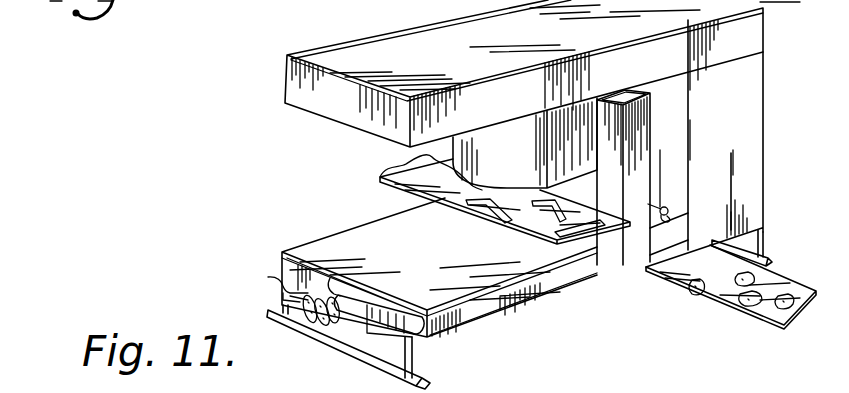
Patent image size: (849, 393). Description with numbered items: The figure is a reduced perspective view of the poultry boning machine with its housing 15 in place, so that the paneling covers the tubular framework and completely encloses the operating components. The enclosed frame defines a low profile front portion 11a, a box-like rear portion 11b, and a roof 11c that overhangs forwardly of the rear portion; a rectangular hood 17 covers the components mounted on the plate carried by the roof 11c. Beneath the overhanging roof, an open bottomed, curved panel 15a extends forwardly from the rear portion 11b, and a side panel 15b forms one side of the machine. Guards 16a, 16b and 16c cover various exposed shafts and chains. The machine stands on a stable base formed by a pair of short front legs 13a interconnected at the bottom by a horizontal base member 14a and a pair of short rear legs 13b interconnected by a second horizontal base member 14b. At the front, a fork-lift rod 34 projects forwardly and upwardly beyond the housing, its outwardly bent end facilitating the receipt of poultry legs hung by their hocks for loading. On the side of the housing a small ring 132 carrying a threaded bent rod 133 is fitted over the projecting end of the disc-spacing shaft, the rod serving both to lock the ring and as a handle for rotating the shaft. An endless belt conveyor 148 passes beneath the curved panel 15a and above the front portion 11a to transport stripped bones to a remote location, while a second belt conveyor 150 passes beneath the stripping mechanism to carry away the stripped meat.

The low profile front portion 11a is at (357, 230).
The box-like rear portion 11b is at (762, 169).
The roof 11c is at (316, 125).
The front legs 13a is at (276, 305).
The rear legs 13b is at (764, 233).
The horizontal base member 14a is at (337, 342).
The second horizontal base member 14b is at (772, 259).
The housing 15 is at (752, 79).
The curved panel 15a is at (580, 113).
The side panel 15b is at (756, 119).
The guard 16a is at (645, 131).
The guard 16b is at (549, 284).
The guard 16c is at (358, 303).
The rectangular hood 17 is at (288, 77).
The fork-lift rod 34 is at (272, 277).
The ring 132 is at (661, 206).
The bent rod 133 is at (669, 214).
The endless belt conveyor 148 is at (390, 176).
The second belt conveyor 150 is at (732, 292).